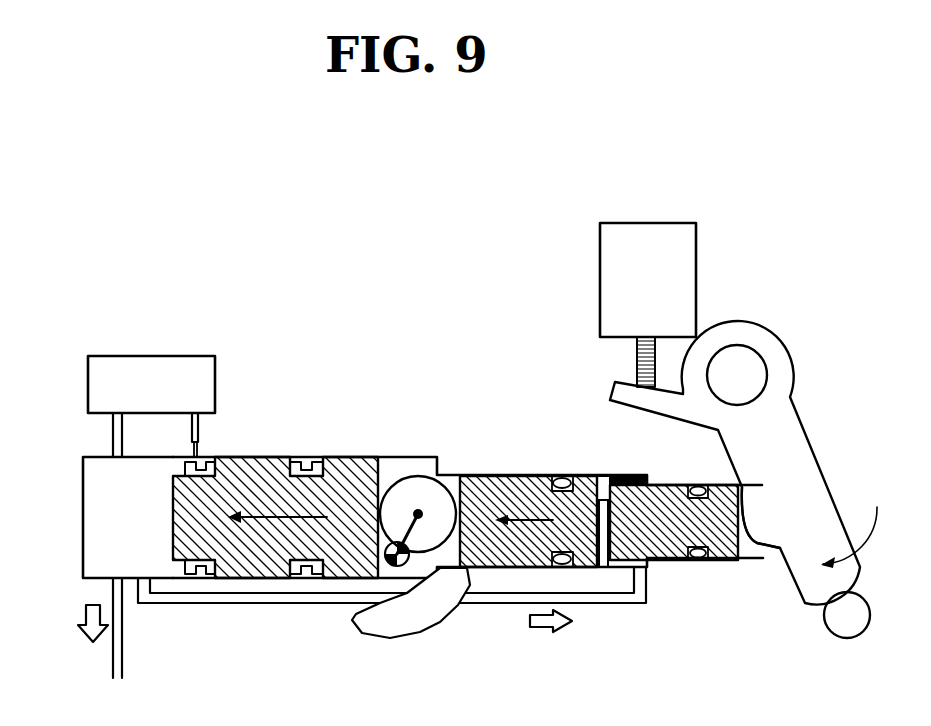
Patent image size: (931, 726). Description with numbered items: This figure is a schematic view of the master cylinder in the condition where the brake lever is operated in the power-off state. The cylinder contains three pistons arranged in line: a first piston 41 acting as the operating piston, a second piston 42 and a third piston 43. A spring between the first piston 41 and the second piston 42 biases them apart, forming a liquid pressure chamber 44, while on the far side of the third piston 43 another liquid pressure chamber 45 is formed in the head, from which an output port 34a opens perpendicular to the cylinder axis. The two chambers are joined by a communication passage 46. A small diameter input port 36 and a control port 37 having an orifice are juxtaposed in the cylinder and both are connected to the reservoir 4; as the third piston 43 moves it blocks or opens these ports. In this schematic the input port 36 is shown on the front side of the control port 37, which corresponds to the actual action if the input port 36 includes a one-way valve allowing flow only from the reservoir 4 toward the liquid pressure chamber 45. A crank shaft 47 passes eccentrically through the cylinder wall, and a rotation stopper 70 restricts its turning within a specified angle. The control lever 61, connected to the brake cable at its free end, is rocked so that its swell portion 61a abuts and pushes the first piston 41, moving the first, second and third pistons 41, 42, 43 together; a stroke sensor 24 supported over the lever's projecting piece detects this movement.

The reservoir 4 is at (178, 356).
The stroke sensor 24 is at (600, 272).
The output port 34a is at (110, 592).
The input port 36 is at (110, 452).
The control port 37 is at (197, 455).
The first piston 41 is at (660, 486).
The second piston 42 is at (500, 476).
The third piston 43 is at (258, 472).
The liquid pressure chamber 44 is at (596, 532).
The liquid pressure chamber 45 is at (124, 528).
The communication passage 46 is at (307, 603).
The crank shaft 47 is at (418, 493).
The control lever 61 is at (823, 455).
The swell portion 61a is at (745, 565).
The rotation stopper 70 is at (420, 634).